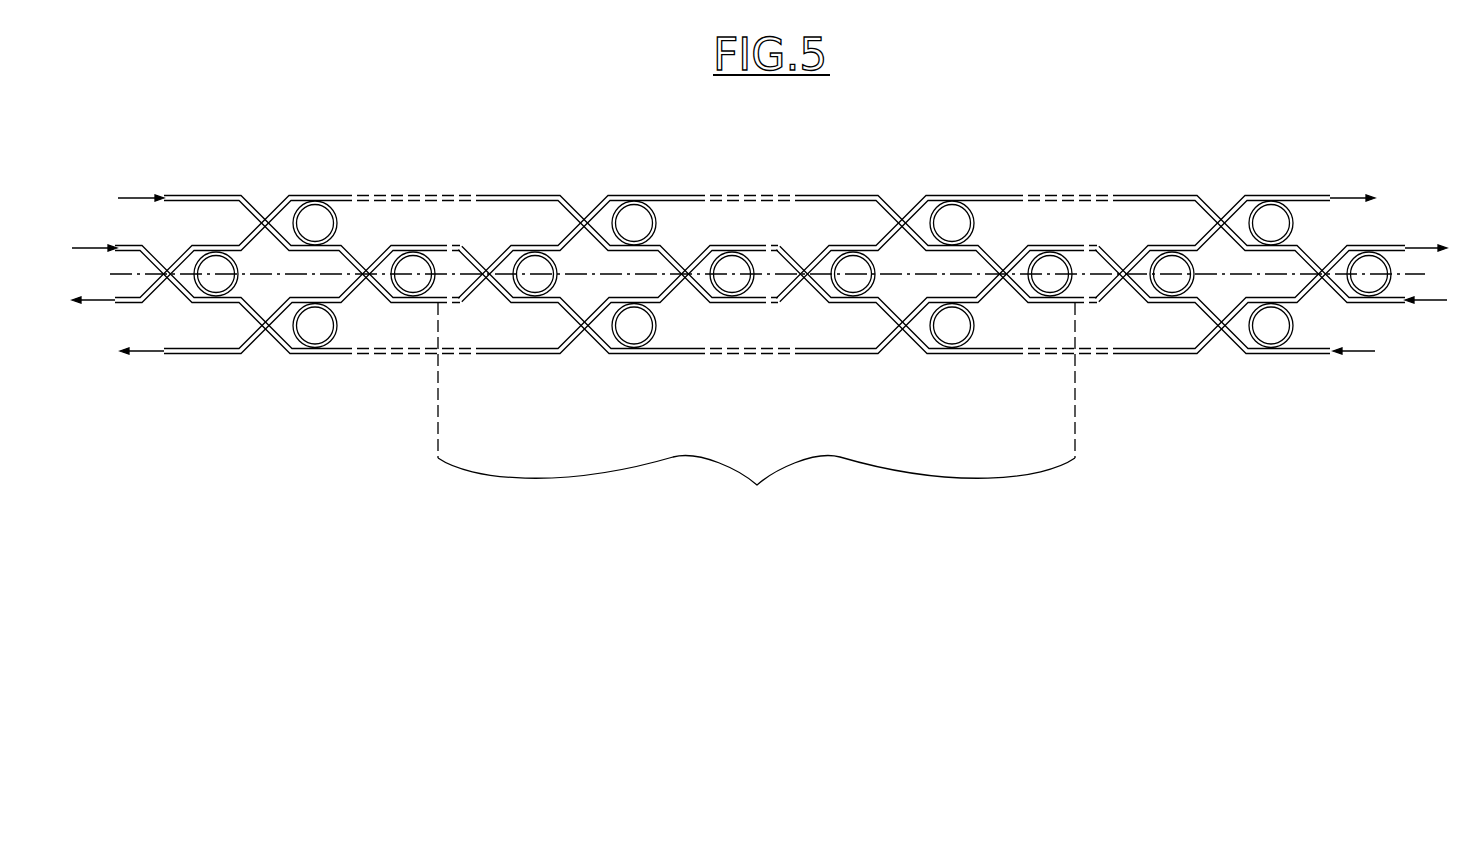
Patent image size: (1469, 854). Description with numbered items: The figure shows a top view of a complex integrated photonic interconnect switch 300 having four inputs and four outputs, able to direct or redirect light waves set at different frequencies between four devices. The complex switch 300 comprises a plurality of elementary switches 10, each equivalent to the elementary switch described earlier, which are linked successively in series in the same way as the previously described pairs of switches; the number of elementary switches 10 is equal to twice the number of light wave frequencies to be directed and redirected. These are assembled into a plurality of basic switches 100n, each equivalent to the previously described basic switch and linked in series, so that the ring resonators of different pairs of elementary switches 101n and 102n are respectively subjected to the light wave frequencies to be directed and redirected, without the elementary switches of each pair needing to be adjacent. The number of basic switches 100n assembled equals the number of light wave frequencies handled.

The complex switch 300 is at (759, 288).
The elementary switch 10 is at (269, 189).
The basic switch 100n is at (779, 320).
The elementary switch 101n is at (906, 189).
The elementary switch 102n is at (588, 189).